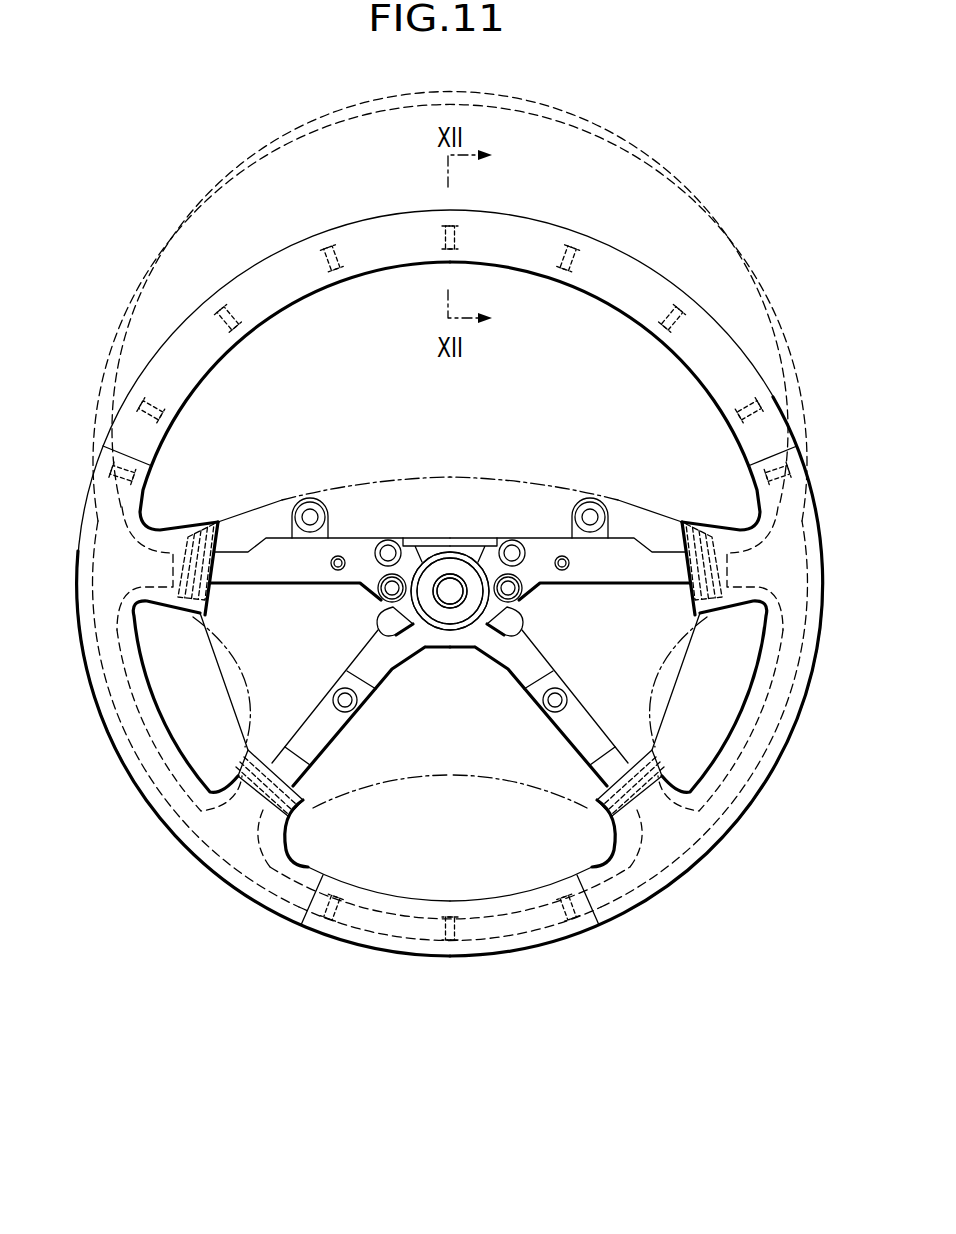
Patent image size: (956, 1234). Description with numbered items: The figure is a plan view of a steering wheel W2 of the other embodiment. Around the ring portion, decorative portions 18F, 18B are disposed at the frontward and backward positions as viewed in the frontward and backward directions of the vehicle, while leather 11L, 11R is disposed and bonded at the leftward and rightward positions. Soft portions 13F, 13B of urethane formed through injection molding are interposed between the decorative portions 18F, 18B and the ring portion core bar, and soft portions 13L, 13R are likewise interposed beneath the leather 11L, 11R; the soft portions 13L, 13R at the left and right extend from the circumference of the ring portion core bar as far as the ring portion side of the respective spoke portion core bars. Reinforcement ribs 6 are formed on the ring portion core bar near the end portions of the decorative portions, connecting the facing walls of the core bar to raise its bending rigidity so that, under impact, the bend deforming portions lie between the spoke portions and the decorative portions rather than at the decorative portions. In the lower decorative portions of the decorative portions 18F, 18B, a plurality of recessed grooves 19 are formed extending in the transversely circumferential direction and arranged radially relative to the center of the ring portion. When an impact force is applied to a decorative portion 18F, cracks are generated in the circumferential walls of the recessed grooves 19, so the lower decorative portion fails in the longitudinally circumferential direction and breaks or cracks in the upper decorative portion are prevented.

The steering wheel W2 is at (208, 985).
The reinforcement rib 6 is at (110, 472).
The leather 11L is at (132, 762).
The leather 11R is at (735, 812).
The soft portion 13F is at (378, 237).
The soft portion 13B is at (519, 933).
The soft portion 13L is at (198, 838).
The soft portion 13R is at (670, 863).
The decorative portion 18F is at (577, 247).
The decorative portion 18B is at (417, 945).
The recessed groove 19 is at (772, 390).